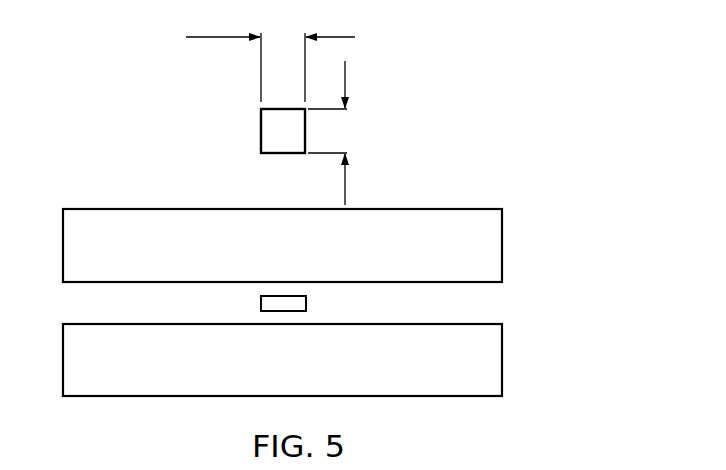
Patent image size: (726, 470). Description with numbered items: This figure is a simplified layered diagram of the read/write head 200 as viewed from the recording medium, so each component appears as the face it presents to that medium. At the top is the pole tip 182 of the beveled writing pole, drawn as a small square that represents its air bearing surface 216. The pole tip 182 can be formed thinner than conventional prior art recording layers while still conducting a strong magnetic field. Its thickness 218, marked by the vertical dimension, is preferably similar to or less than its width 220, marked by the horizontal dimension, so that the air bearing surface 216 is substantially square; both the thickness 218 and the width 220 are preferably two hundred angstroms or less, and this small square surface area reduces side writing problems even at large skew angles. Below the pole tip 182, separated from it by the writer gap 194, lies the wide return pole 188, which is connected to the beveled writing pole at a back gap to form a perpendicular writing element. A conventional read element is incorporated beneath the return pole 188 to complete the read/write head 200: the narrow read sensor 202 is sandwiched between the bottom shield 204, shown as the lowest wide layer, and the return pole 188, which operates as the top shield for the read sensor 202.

The read/write head 200 is at (485, 102).
The pole tip 182 is at (268, 118).
The air bearing surface 216 is at (276, 137).
The writer gap 194 is at (277, 180).
The return pole 188 is at (487, 250).
The read sensor 202 is at (279, 297).
The bottom shield 204 is at (483, 357).
The thickness 218 is at (345, 61).
The width 220 is at (240, 62).